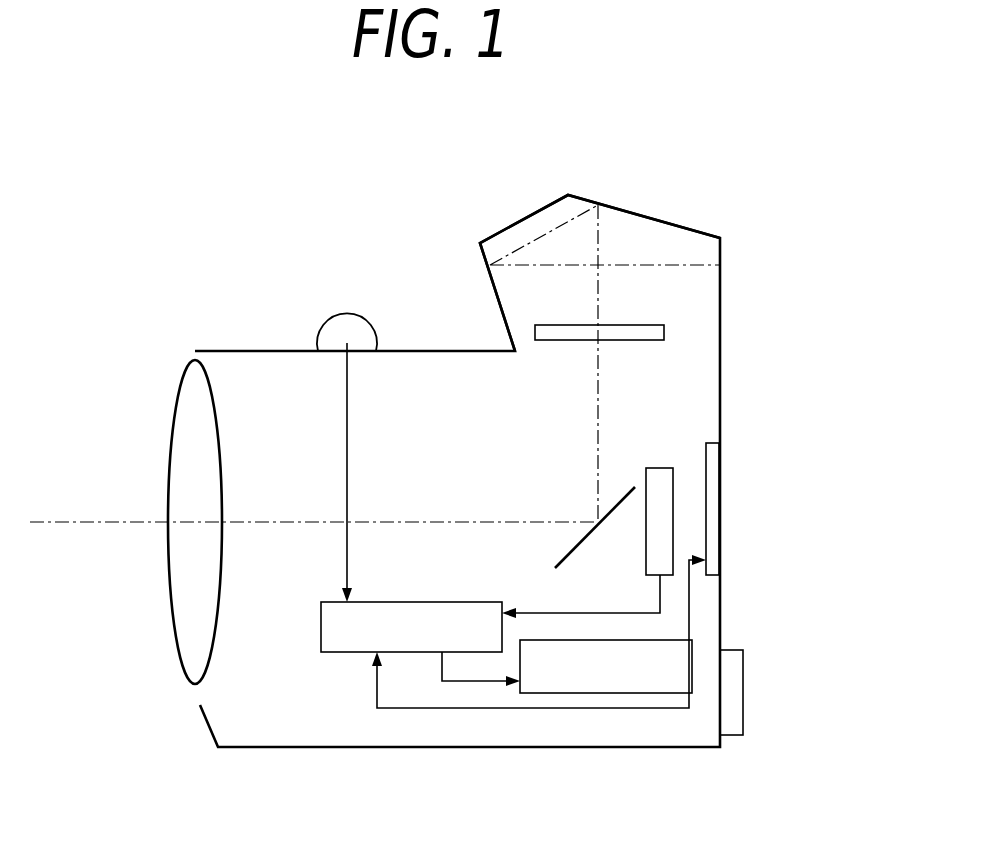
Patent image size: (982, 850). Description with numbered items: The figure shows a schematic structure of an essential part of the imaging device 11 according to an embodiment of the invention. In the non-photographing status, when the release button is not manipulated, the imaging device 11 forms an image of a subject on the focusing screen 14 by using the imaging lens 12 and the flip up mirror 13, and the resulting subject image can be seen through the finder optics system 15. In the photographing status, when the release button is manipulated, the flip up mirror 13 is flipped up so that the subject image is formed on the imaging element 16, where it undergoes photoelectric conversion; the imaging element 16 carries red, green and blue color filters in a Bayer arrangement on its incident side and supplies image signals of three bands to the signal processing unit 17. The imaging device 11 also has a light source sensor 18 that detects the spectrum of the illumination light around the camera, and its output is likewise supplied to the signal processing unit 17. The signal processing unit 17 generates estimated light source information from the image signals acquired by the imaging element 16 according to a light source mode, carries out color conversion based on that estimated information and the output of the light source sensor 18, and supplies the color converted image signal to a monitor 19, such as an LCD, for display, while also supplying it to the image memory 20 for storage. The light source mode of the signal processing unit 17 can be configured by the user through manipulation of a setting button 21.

The imaging device 11 is at (766, 296).
The imaging lens 12 is at (182, 445).
The flip up mirror 13 is at (567, 555).
The focusing screen 14 is at (664, 332).
The finder optics system 15 is at (627, 235).
The imaging element 16 is at (662, 468).
The signal processing unit 17 is at (333, 652).
The light source sensor 18 is at (340, 325).
The monitor 19 is at (716, 508).
The image memory 20 is at (652, 693).
The setting button 21 is at (733, 724).